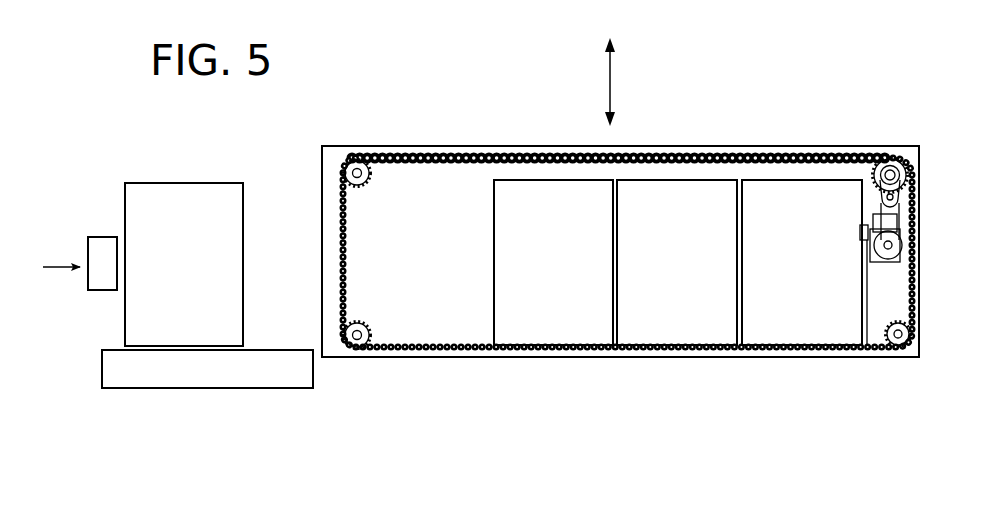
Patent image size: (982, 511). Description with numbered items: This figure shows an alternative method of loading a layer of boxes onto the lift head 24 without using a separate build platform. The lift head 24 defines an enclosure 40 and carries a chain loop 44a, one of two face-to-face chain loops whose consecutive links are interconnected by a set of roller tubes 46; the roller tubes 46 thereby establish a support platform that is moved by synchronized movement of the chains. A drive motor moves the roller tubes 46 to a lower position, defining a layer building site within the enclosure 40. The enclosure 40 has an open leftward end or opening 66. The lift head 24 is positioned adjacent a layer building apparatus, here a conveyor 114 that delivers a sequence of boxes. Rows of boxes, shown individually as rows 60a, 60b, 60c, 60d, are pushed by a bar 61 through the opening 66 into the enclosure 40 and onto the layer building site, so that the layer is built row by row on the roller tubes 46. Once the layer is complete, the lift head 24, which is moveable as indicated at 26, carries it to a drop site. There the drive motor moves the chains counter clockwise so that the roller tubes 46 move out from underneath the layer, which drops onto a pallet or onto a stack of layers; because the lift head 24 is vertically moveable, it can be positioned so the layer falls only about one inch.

The lift head 24 is at (744, 144).
The movement of lift head 26 is at (613, 78).
The enclosure 40 is at (438, 156).
The opening 66 is at (350, 218).
The chain loop 44a is at (346, 252).
The roller tubes 46 is at (571, 357).
The row of boxes 60a is at (778, 279).
The row of boxes 60b is at (653, 279).
The row of boxes 60c is at (530, 279).
The row of boxes 60d is at (160, 279).
The bar 61 is at (104, 283).
The conveyor 114 is at (201, 372).